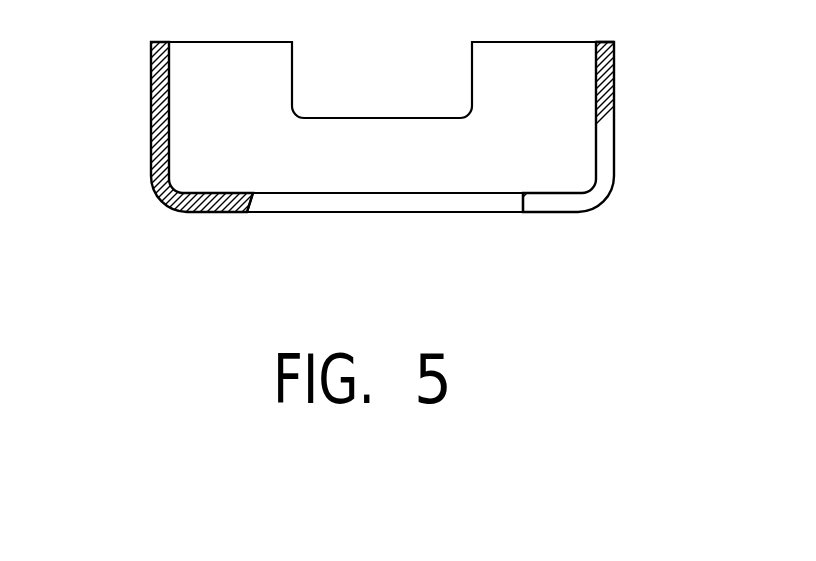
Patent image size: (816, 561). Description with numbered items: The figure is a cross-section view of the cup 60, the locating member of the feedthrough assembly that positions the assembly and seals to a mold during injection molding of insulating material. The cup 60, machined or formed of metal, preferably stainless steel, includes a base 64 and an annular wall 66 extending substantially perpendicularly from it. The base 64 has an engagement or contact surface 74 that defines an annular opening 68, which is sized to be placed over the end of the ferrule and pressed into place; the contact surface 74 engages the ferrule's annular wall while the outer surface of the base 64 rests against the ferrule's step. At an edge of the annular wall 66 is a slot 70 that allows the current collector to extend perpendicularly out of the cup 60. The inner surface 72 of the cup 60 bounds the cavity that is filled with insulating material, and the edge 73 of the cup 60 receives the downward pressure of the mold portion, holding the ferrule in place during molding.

The cup 60 is at (360, 167).
The base 64 is at (553, 212).
The annular wall 66 is at (151, 87).
The annular opening 68 is at (384, 211).
The slot 70 is at (292, 76).
The inner surface 72 is at (596, 91).
The edge 73 is at (600, 42).
The contact surface 74 is at (254, 194).